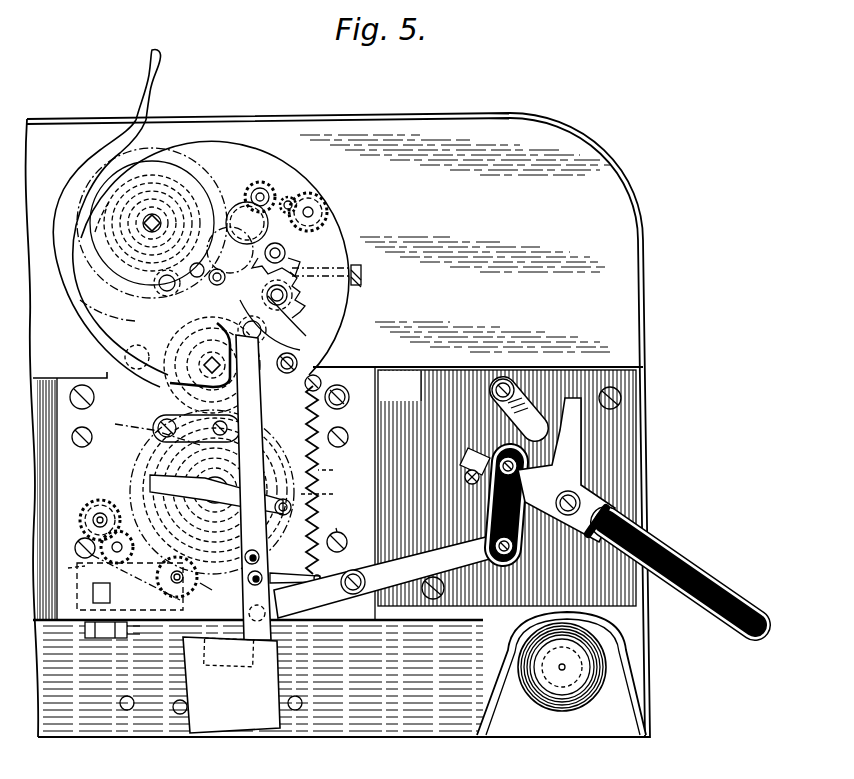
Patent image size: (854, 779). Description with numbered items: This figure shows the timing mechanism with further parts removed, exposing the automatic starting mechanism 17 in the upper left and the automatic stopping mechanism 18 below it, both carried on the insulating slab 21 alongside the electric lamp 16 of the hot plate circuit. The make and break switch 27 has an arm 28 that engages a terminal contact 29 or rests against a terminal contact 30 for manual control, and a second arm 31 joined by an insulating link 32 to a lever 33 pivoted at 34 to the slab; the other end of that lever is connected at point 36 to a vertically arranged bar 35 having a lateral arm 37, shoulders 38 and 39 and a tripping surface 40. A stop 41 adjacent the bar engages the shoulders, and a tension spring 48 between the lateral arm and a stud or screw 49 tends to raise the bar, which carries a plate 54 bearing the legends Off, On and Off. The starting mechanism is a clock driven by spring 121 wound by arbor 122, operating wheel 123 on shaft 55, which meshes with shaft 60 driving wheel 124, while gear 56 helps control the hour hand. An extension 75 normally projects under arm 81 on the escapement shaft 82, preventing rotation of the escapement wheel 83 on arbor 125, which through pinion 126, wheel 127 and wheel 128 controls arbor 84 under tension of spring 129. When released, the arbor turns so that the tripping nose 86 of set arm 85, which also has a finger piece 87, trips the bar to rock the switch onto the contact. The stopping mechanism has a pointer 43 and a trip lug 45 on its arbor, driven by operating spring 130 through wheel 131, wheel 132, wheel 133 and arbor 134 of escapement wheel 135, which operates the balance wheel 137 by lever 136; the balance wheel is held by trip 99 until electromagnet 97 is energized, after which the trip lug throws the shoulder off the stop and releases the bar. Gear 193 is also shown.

The electric lamp 16 is at (608, 668).
The automatic starting mechanism 17 is at (215, 258).
The automatic stopping mechanism 18 is at (338, 493).
The insulating slab 21 is at (495, 380).
The make and break switch 27 is at (675, 552).
The arm 28 is at (575, 458).
The terminal contact 29 is at (530, 400).
The terminal contact 30 is at (466, 462).
The arm 31 is at (525, 502).
The insulating link 32 is at (503, 556).
The lever 33 is at (385, 577).
The pivot 34 is at (355, 570).
The vertically arranged bar 35 is at (253, 487).
The connection point 36 is at (280, 650).
The lateral arm 37 is at (302, 573).
The shoulder 38 is at (318, 470).
The shoulder 39 is at (222, 485).
The tripping surface 40 is at (262, 328).
The stop 41 is at (305, 384).
The pointer 43 is at (160, 472).
The trip lug 45 is at (245, 470).
The tension spring 48 is at (336, 520).
The stud or screw 49 is at (507, 488).
The plate 54 is at (230, 718).
The shaft 55 is at (130, 297).
The gear 56 is at (152, 223).
The shaft 60 is at (226, 283).
The right angled extension 75 is at (287, 297).
The arm 81 is at (362, 270).
The escapement shaft 82 is at (285, 253).
The escapement wheel 83 is at (306, 336).
The arbor 84 is at (153, 424).
The set arm 85 is at (98, 153).
The tripping nose 86 is at (212, 326).
The finger piece 87 is at (150, 97).
The electromagnet 97 is at (121, 592).
The trip 99 is at (166, 579).
The spring 121 is at (108, 205).
The arbor 122 is at (160, 215).
The wheel 123 is at (154, 283).
The wheel 124 is at (135, 321).
The arbor 125 is at (300, 350).
The pinion 126 is at (300, 292).
The wheel 127 is at (297, 362).
The wheel 128 is at (177, 340).
The spring 129 is at (143, 425).
The operating spring 130 is at (336, 470).
The wheel 131 is at (327, 494).
The wheel 132 is at (100, 500).
The wheel 133 is at (92, 520).
The arbor 134 is at (110, 562).
The escapement wheel 135 is at (59, 570).
The lever 136 is at (88, 644).
The balance wheel 137 is at (154, 645).
The gear 193 is at (219, 593).